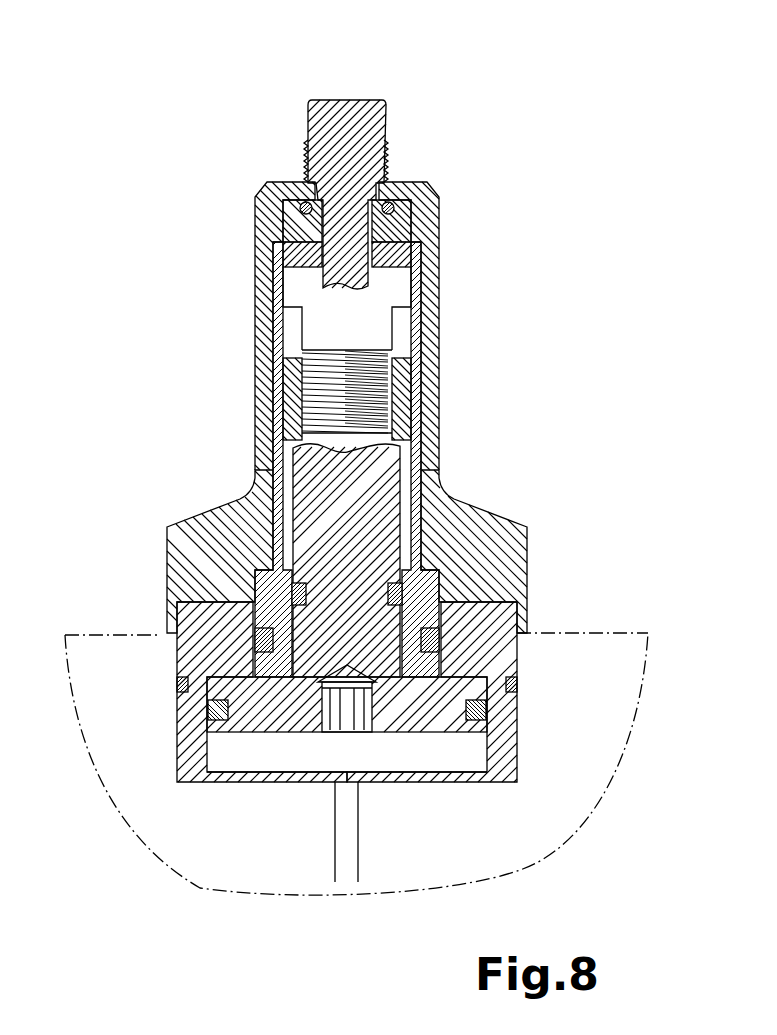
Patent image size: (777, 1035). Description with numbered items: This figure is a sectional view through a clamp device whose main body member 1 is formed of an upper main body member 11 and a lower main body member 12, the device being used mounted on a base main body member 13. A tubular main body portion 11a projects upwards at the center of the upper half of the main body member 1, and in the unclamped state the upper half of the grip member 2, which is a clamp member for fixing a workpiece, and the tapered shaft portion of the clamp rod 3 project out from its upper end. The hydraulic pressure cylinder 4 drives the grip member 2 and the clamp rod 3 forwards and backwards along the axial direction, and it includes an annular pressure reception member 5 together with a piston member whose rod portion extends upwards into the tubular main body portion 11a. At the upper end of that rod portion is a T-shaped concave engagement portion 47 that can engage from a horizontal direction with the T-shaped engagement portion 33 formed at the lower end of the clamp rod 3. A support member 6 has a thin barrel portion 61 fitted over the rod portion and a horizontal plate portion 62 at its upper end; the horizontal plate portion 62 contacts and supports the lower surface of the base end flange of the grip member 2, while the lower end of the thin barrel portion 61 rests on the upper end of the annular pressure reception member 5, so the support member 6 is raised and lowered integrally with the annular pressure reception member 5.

The main body member 1 is at (630, 537).
The grip member 2 is at (392, 135).
The clamp rod 3 is at (372, 93).
The hydraulic pressure cylinder 4 is at (265, 747).
The annular pressure reception member 5 is at (438, 562).
The support member 6 is at (427, 343).
The upper main body member 11 is at (395, 404).
The tubular main body portion 11a is at (439, 267).
The lower main body member 12 is at (517, 610).
The base main body member 13 is at (544, 842).
The T-shaped engagement portion 33 is at (322, 335).
The T-shaped concave engagement portion 47 is at (302, 293).
The thin barrel portion 61 is at (275, 430).
The horizontal plate portion 62 is at (273, 248).